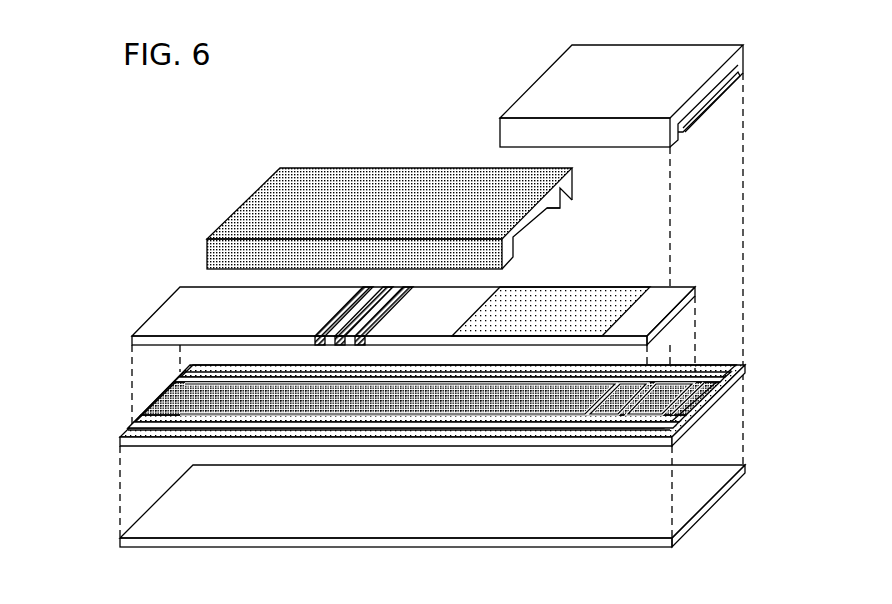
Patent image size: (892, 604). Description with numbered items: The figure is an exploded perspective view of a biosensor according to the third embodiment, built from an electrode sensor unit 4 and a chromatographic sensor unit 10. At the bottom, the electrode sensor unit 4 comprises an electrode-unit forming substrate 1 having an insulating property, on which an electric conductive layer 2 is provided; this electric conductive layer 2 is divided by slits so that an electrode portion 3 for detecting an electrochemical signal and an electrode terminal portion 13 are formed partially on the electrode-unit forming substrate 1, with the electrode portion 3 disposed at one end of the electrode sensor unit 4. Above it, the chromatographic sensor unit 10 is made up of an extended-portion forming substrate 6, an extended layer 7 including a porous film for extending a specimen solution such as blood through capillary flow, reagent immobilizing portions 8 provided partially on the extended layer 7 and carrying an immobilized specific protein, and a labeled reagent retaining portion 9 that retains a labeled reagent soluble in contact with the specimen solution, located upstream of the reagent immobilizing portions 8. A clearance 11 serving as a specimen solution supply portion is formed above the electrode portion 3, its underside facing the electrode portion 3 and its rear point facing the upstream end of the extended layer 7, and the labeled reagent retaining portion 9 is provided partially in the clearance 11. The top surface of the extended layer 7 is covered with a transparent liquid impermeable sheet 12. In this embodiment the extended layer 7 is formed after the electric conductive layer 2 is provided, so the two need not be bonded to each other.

The electrode-unit forming substrate 1 is at (120, 545).
The electric conductive layer 2 is at (168, 400).
The electrode portion 3 is at (416, 360).
The electrode sensor unit 4 is at (55, 383).
The extended-portion forming substrate 6 is at (704, 46).
The extended layer 7 is at (170, 323).
The reagent immobilizing portions 8 is at (408, 282).
The labeled reagent retaining portion 9 is at (583, 296).
The chromatographic sensor unit 10 is at (458, 224).
The clearance 11 is at (745, 77).
The transparent liquid impermeable sheet 12 is at (413, 173).
The electrode terminal portion 13 is at (127, 428).